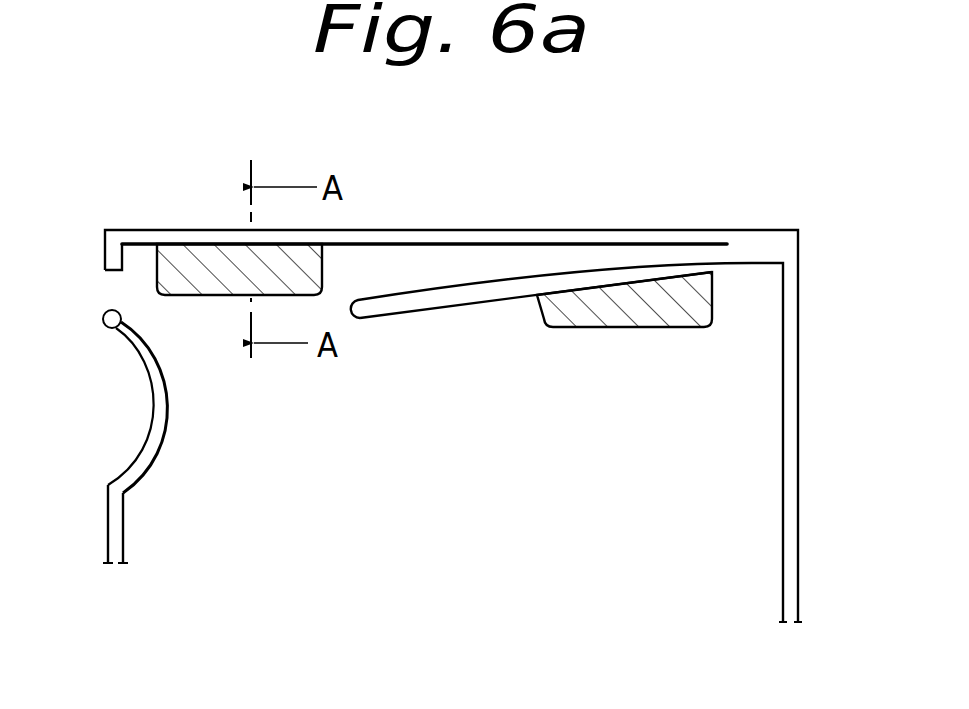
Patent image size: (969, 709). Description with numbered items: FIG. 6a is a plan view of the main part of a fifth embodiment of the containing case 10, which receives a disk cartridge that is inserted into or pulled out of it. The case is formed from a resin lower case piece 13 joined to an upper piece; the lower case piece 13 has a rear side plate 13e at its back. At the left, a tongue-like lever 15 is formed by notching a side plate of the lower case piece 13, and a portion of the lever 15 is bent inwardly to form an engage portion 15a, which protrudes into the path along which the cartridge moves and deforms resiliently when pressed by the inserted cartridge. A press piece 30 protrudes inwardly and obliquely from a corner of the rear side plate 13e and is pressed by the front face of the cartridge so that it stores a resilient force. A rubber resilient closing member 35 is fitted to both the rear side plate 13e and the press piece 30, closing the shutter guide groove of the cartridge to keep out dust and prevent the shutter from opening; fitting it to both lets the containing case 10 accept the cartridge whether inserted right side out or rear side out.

The containing case 10 is at (803, 480).
The lower case piece 13 is at (804, 218).
The rear side plate 13e is at (430, 228).
The lever 15 is at (125, 532).
The engage portion 15a is at (150, 417).
The press piece 30 is at (452, 308).
The resilient closing member 35 is at (200, 296).